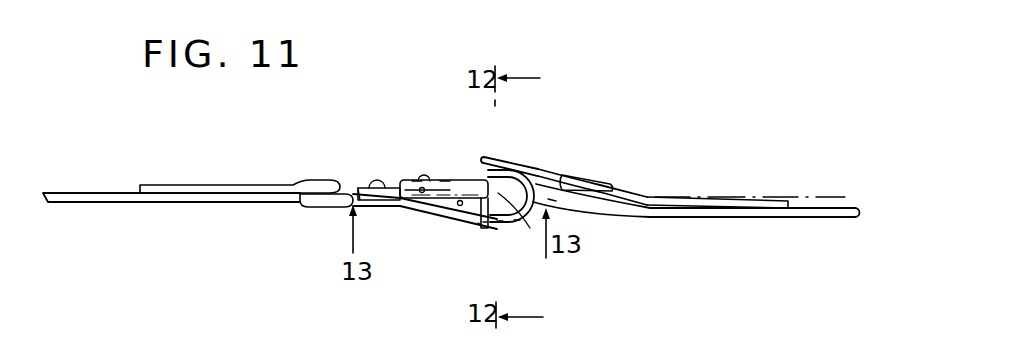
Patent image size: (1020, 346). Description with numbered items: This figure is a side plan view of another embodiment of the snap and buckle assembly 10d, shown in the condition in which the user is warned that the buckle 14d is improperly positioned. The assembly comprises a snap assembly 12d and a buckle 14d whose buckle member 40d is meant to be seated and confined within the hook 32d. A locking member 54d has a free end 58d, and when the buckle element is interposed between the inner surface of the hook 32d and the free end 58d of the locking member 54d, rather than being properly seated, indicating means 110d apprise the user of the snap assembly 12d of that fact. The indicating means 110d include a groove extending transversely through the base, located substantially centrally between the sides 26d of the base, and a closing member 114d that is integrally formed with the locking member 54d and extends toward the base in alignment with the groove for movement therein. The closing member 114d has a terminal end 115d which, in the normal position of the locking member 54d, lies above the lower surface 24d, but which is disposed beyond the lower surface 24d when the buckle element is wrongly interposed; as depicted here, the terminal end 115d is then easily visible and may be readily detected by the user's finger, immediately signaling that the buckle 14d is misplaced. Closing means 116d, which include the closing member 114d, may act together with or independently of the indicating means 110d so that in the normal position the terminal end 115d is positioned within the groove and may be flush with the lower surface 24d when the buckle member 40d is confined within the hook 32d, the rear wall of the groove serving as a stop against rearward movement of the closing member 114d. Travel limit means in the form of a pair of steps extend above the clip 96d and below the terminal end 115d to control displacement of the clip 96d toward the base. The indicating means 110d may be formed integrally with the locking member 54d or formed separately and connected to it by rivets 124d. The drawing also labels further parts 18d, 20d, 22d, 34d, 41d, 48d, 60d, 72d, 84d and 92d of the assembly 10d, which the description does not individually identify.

The snap and buckle assembly 10d is at (626, 167).
The snap assembly 12d is at (268, 210).
The buckle 14d is at (714, 225).
The frame side 18d is at (517, 221).
The tongue plate 20d is at (293, 186).
The belt web 22d is at (456, 214).
The lower surface 24d is at (500, 223).
The sides of base 26d is at (420, 207).
The hook 32d is at (538, 218).
The strap 34d is at (577, 172).
The buckle member 40d is at (648, 197).
The center line 41d is at (730, 196).
The belt end 48d is at (847, 208).
The locking member 54d is at (427, 181).
The free end of locking member 58d is at (478, 173).
The end fitting 60d is at (313, 207).
The latch 72d is at (358, 188).
The rivet 84d is at (377, 182).
The block 92d is at (403, 203).
The clip 96d is at (443, 178).
The indicating means 110d is at (474, 232).
The closing member 114d is at (552, 200).
The terminal end 115d is at (493, 222).
The closing means 116d is at (463, 218).
The rivets 124d is at (417, 183).